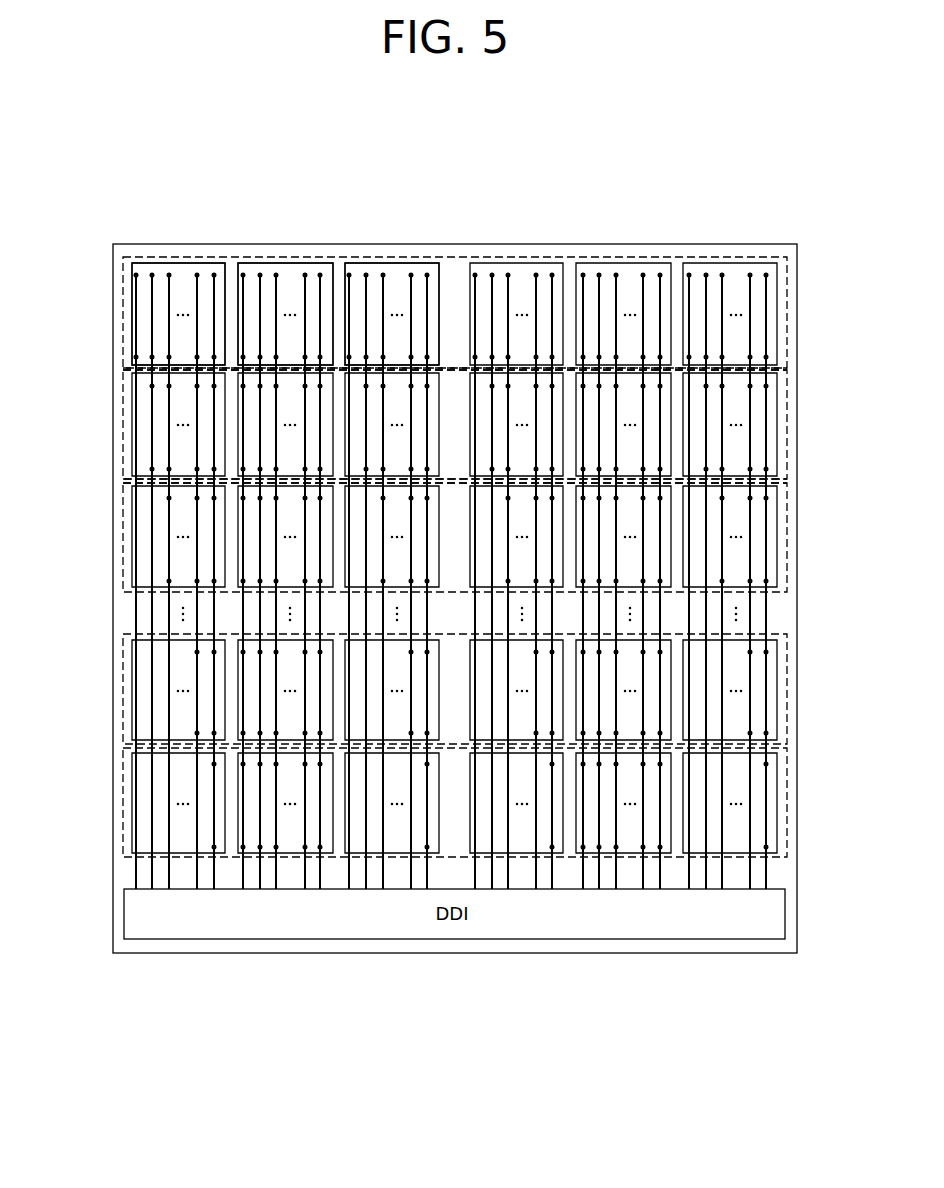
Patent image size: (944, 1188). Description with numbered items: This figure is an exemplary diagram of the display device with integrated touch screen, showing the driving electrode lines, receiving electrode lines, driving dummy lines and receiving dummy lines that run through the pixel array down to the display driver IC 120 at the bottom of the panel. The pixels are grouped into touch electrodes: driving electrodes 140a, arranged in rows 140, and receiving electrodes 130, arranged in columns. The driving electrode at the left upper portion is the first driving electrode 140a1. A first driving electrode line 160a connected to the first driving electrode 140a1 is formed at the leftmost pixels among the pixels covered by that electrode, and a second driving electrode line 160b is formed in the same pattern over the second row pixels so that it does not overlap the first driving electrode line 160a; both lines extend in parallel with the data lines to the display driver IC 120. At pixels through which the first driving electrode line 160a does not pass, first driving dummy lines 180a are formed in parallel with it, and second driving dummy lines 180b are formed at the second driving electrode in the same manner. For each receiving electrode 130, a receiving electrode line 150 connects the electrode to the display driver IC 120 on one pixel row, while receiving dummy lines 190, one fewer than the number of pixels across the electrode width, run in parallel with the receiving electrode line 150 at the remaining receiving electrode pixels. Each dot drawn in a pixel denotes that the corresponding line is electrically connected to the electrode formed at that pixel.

The display driver IC 120 is at (610, 940).
The receiving electrode 130 is at (290, 262).
The pixel row block 140 is at (808, 796).
The driving electrode 140a is at (393, 262).
The first driving electrode 140a1 is at (155, 262).
The receiving electrode line 150 is at (243, 878).
The first driving electrode line 160a is at (137, 373).
The second driving electrode line 160b is at (150, 483).
The first driving dummy line 180a is at (197, 300).
The second driving dummy line 180b is at (168, 408).
The receiving dummy line 190 is at (277, 827).